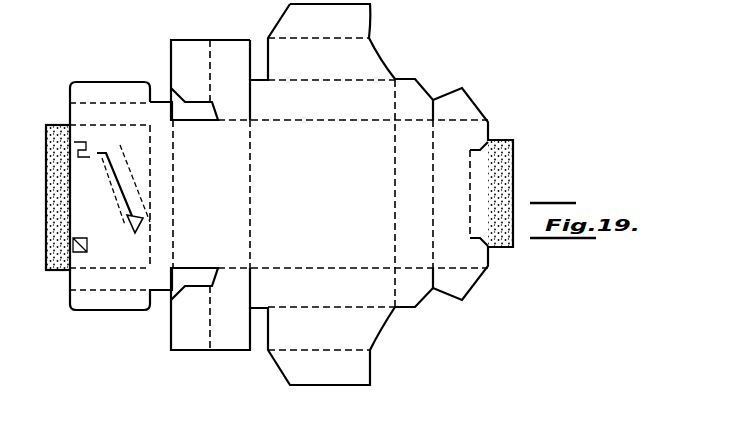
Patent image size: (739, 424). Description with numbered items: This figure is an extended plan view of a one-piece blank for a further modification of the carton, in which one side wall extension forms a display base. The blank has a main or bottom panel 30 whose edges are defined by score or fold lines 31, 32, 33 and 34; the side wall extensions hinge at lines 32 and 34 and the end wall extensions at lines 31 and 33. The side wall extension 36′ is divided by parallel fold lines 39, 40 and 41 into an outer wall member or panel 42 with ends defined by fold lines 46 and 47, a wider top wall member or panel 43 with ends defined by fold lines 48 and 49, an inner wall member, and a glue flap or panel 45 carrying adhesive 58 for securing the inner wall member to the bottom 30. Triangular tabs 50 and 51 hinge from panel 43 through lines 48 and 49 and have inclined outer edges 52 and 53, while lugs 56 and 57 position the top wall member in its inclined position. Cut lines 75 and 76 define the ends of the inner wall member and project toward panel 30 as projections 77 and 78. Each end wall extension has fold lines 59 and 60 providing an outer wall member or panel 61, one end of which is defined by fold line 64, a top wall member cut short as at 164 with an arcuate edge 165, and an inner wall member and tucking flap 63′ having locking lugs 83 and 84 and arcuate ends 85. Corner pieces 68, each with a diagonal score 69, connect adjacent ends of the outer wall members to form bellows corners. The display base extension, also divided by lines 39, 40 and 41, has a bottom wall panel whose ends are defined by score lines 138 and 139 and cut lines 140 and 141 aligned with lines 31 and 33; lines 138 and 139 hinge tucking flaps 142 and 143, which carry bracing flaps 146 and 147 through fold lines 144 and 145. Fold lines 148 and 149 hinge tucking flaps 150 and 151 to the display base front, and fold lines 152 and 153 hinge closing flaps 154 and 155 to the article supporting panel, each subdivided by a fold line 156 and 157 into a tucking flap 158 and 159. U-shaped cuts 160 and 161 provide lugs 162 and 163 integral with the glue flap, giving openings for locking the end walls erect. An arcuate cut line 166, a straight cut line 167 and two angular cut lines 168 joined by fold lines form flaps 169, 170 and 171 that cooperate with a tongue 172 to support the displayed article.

The main or bottom panel 30 is at (338, 185).
The score or fold line 31 is at (324, 120).
The score or fold line 32 is at (395, 188).
The score or fold line 33 is at (334, 266).
The score or fold line 34 is at (251, 188).
The side wall extension 36′ is at (503, 73).
The score or fold line 39 is at (174, 188).
The score or fold line 40 is at (470, 183).
The score or fold line 41 is at (486, 176).
The panel 42 is at (394, 225).
The panel 43 is at (432, 197).
The glue flap 45 is at (514, 178).
The score or fold line 46 is at (405, 122).
The score or fold line 47 is at (432, 237).
The score or fold line 48 is at (449, 124).
The score or fold line 49 is at (488, 245).
The tab 50 is at (482, 112).
The tab 51 is at (480, 283).
The inclined or outer edge 52 is at (482, 106).
The inclined or outer edge 53 is at (470, 300).
The lug 56 is at (490, 123).
The lug 57 is at (492, 258).
The adhesive 58 is at (514, 152).
The score or fold line 59 is at (364, 80).
The score or fold line 60 is at (326, 40).
The panel 61 is at (348, 120).
The end wall inner wall member and tucking flap 63′ is at (338, 385).
The score or fold line 64 is at (383, 128).
The corner piece 68 is at (440, 97).
The diagonal score 69 is at (420, 92).
The cut line 75 is at (470, 150).
The cut line 76 is at (480, 238).
The projection 77 is at (466, 152).
The projection 78 is at (470, 211).
The locking lug 83 is at (372, 36).
The locking lug 84 is at (267, 38).
The arcuate shape 85 is at (367, 15).
The score line 138 is at (226, 127).
The score line 139 is at (236, 274).
The cut line 140 is at (197, 127).
The cut line 141 is at (204, 277).
The tucking flap 142 is at (236, 42).
The tucking flap 143 is at (240, 348).
The score or fold line 144 is at (210, 74).
The score or fold line 145 is at (214, 313).
The bracing flap 146 is at (170, 56).
The bracing flap 147 is at (196, 345).
The score or fold line 148 is at (173, 151).
The score or fold line 149 is at (174, 268).
The tucking flap 150 is at (158, 100).
The tucking flap 151 is at (158, 300).
The score or fold line 152 is at (138, 124).
The score or fold line 153 is at (130, 275).
The closing flap 154 is at (72, 118).
The closing flap 155 is at (72, 285).
The score or fold line 156 is at (98, 103).
The score or fold line 157 is at (98, 292).
The tucking flap 158 is at (94, 88).
The tucking flap 159 is at (95, 310).
The U-shaped cut 160 is at (74, 158).
The U-shaped cut 161 is at (84, 242).
The lug 162 is at (85, 140).
The lug 163 is at (87, 253).
The cut-short end 164 is at (270, 58).
The arcuate edge 165 is at (387, 62).
The arcuate cut line 166 is at (124, 146).
The straight cut line 167 is at (112, 170).
The angular cut line 168 is at (132, 228).
The flap 169 is at (122, 207).
The flap 170 is at (150, 188).
The flap 171 is at (142, 234).
The tongue 172 is at (105, 152).